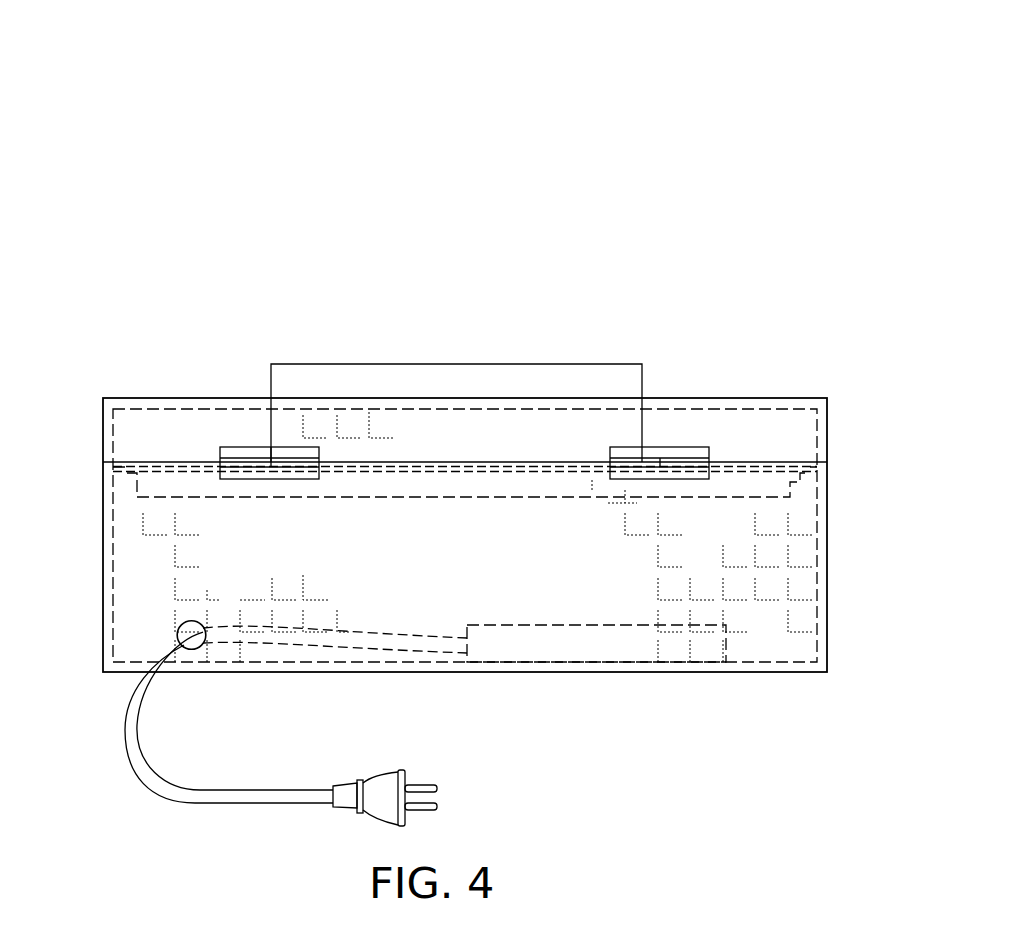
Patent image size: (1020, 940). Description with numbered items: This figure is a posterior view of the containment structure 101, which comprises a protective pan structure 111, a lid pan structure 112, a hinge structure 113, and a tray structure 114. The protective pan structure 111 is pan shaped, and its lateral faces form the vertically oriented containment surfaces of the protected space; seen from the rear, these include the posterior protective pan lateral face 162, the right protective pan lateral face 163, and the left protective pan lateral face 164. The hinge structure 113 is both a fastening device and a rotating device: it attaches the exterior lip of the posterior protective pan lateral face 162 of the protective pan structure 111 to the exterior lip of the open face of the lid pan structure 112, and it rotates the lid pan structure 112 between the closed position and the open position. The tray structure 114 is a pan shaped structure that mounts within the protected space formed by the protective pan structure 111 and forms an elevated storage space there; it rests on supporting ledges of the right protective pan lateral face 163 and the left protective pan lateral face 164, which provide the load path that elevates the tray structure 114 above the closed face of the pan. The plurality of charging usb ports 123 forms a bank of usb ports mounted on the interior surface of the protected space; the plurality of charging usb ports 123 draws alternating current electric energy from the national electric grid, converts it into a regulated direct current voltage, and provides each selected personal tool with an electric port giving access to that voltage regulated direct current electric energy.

The containment structure 101 is at (212, 86).
The protective pan structure 111 is at (783, 640).
The lid pan structure 112 is at (767, 438).
The hinge structure 113 is at (457, 364).
The tray structure 114 is at (157, 496).
The plurality of charging usb ports 123 is at (613, 648).
The posterior protective pan lateral face 162 is at (753, 562).
The right protective pan lateral face 163 is at (827, 560).
The left protective pan lateral face 164 is at (103, 535).